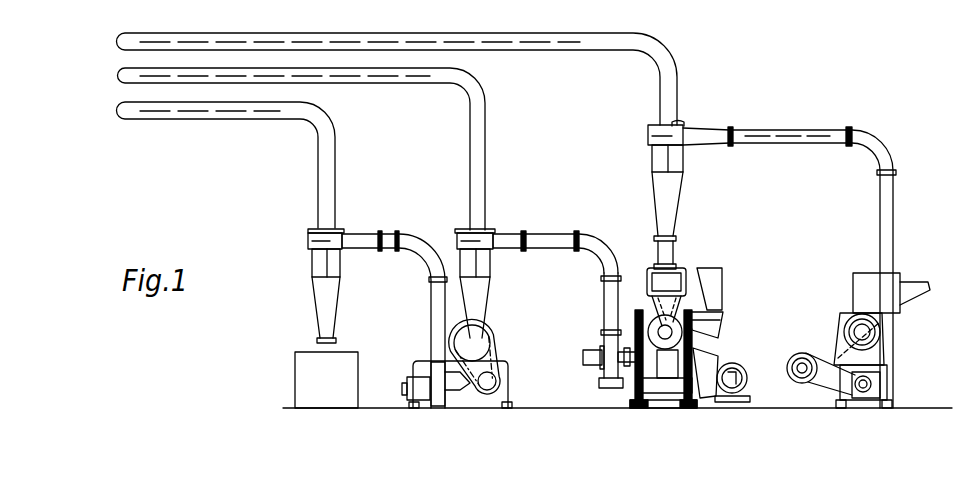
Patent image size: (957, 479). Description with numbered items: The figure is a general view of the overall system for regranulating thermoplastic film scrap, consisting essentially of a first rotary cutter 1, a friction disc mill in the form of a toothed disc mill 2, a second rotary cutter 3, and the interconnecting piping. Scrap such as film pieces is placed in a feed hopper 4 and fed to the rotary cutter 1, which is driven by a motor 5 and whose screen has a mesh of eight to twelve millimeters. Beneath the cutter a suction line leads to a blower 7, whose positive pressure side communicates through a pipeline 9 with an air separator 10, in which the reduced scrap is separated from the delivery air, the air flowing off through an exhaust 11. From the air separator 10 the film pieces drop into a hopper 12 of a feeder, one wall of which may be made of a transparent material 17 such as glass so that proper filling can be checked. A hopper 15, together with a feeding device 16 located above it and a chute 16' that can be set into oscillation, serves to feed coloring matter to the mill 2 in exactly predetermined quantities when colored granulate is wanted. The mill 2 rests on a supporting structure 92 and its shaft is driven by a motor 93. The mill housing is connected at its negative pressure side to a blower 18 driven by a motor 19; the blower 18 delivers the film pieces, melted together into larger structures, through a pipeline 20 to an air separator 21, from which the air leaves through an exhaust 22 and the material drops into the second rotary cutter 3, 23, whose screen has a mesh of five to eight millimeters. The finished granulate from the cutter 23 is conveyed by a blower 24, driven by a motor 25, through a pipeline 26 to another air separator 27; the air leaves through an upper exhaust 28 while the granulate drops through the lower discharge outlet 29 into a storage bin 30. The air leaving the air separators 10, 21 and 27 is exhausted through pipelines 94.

The first rotary cutter 1 is at (842, 352).
The toothed disc mill 2 is at (695, 340).
The second rotary cutter 3 is at (488, 326).
The feed hopper 4 is at (917, 285).
The motor 5 is at (803, 356).
The blower 7 is at (897, 385).
The pipeline 9 is at (805, 133).
The air separator 10 is at (650, 160).
The exhaust 11 is at (680, 122).
The hopper 12 is at (647, 293).
The hopper 15 is at (640, 318).
The feeding device 16 is at (728, 316).
The chute 16' is at (727, 279).
The transparent material 17 is at (683, 300).
The blower 18 is at (610, 388).
The motor 19 is at (585, 382).
The pipeline 20 is at (556, 237).
The air separator 21 is at (483, 265).
The exhaust 22 is at (490, 230).
The rotary cutter 23 is at (500, 345).
The blower 24 is at (432, 408).
The motor 25 is at (408, 392).
The pipeline 26 is at (422, 232).
The air separator 27 is at (311, 266).
The upper exhaust 28 is at (340, 229).
The lower discharge outlet 29 is at (318, 340).
The storage bin 30 is at (330, 400).
The supporting structure 92 is at (634, 410).
The motor 93 is at (738, 397).
The pipelines 94 is at (178, 112).